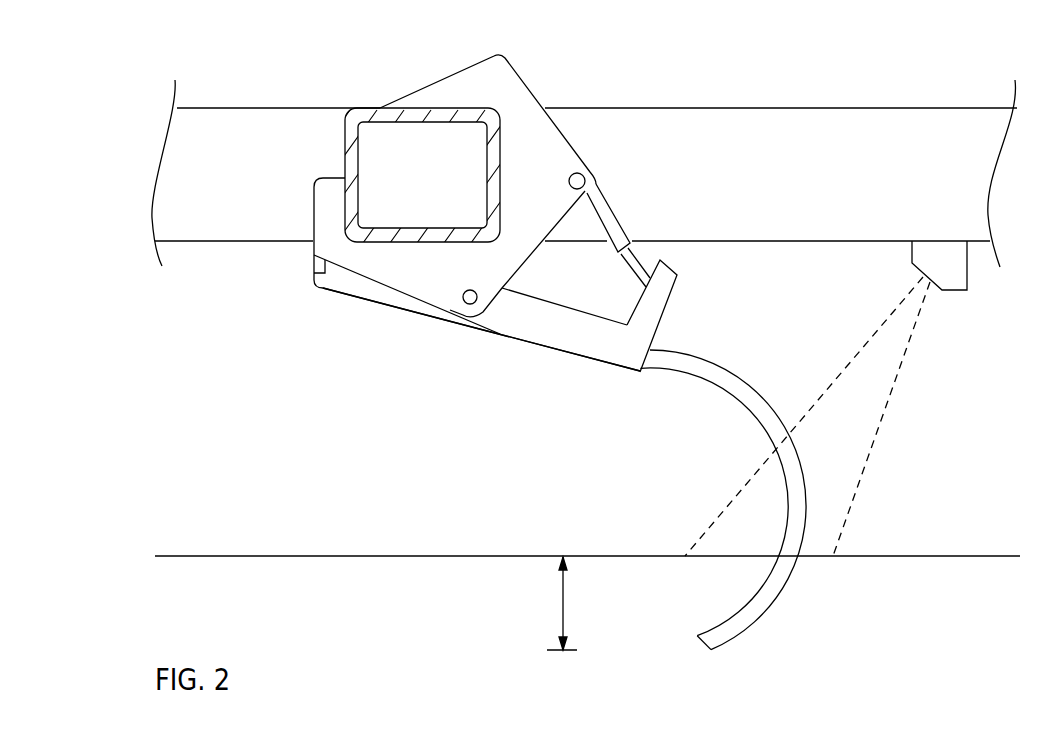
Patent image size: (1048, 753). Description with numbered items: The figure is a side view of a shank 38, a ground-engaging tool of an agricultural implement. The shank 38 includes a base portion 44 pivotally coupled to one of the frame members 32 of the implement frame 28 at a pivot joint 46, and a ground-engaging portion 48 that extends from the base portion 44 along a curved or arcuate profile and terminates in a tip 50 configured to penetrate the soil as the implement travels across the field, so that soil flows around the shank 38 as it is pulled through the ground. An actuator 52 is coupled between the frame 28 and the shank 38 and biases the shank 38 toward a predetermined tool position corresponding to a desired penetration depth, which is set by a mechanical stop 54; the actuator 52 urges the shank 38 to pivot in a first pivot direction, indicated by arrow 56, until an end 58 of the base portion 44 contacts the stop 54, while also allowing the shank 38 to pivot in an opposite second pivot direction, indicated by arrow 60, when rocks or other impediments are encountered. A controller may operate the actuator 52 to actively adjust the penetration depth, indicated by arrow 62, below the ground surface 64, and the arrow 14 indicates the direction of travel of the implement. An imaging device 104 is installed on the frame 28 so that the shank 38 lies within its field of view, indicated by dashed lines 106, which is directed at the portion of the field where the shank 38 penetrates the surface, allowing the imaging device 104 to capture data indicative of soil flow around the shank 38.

The direction of travel 14 is at (90, 370).
The implement frame 28 is at (250, 80).
The frame member 32 is at (385, 108).
The shank 38 is at (729, 432).
The base portion 44 is at (535, 344).
The pivot joint 46 is at (463, 297).
The ground-engaging portion 48 is at (702, 378).
The tip 50 is at (697, 640).
The actuator 52 is at (613, 210).
The mechanical stop 54 is at (313, 256).
The first pivot direction 56 is at (778, 667).
The end of the base portion 58 is at (307, 287).
The second pivot direction 60 is at (747, 300).
The penetration depth 62 is at (562, 600).
The ground surface 64 is at (262, 555).
The imaging device 104 is at (953, 292).
The field of view 106 is at (828, 390).